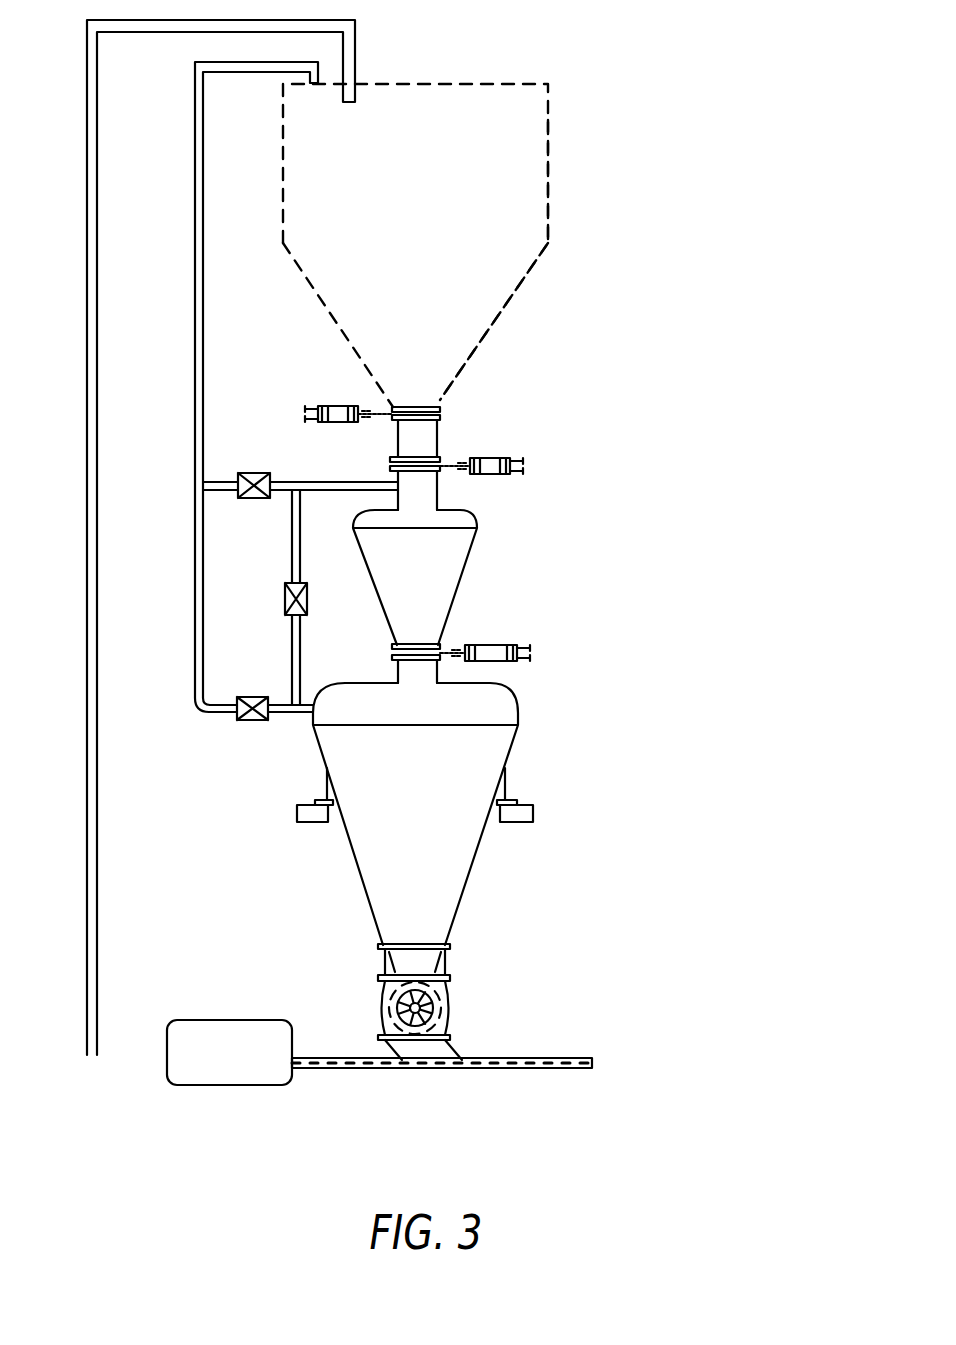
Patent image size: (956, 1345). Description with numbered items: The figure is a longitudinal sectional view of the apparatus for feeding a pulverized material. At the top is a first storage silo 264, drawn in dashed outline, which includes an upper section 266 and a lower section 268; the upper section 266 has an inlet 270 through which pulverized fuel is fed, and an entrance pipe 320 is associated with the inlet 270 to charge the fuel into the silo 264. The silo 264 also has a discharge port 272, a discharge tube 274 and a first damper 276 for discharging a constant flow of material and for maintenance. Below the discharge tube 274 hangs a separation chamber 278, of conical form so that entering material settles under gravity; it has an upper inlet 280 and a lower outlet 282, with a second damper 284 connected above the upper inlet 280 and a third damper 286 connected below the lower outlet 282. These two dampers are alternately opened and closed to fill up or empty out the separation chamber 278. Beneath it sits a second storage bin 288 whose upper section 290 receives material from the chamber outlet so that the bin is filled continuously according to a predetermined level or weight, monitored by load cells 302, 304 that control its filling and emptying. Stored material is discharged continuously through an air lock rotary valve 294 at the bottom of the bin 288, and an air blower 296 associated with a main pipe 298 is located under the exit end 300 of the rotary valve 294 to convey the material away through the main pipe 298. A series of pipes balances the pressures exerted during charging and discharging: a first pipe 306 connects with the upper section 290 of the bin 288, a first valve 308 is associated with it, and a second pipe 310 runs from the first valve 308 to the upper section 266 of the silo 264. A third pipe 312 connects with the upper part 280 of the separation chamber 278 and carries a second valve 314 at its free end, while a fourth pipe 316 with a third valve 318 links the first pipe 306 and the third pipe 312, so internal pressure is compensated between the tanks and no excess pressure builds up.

The first storage silo 264 is at (517, 268).
The upper section 266 is at (525, 117).
The lower section 268 is at (478, 340).
The inlet 270 is at (355, 93).
The discharge port 272 is at (427, 405).
The discharge tube 274 is at (435, 437).
The first damper 276 is at (333, 407).
The separation chamber 278 is at (437, 547).
The upper inlet 280 is at (430, 493).
The lower outlet 282 is at (395, 672).
The second damper 284 is at (505, 474).
The third damper 286 is at (497, 645).
The second storage bin 288 is at (478, 743).
The upper section 290 is at (437, 672).
The air lock rotary valve 294 is at (447, 993).
The air blower 296 is at (238, 1022).
The main pipe 298 is at (538, 1070).
The exit end 300 is at (452, 1048).
The load cell 302 is at (318, 824).
The load cell 304 is at (525, 824).
The first pipe 306 is at (290, 713).
The first valve 308 is at (245, 724).
The second pipe 310 is at (194, 535).
The third pipe 312 is at (318, 482).
The second valve 314 is at (266, 473).
The fourth pipe 316 is at (300, 674).
The third valve 318 is at (285, 597).
The entrance pipe 320 is at (87, 618).